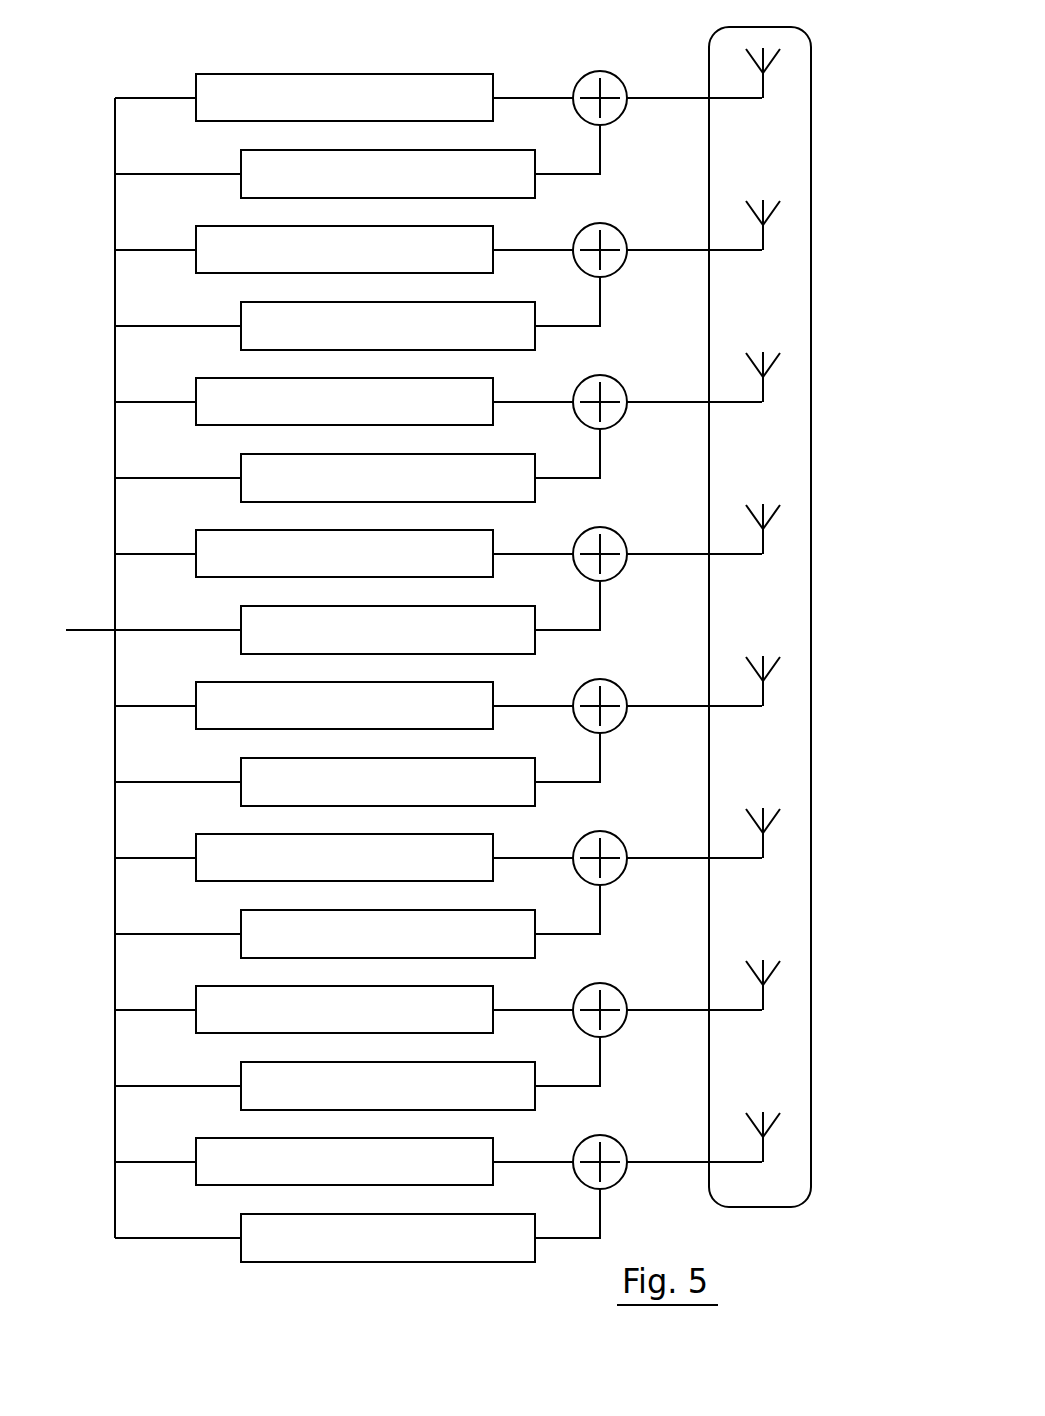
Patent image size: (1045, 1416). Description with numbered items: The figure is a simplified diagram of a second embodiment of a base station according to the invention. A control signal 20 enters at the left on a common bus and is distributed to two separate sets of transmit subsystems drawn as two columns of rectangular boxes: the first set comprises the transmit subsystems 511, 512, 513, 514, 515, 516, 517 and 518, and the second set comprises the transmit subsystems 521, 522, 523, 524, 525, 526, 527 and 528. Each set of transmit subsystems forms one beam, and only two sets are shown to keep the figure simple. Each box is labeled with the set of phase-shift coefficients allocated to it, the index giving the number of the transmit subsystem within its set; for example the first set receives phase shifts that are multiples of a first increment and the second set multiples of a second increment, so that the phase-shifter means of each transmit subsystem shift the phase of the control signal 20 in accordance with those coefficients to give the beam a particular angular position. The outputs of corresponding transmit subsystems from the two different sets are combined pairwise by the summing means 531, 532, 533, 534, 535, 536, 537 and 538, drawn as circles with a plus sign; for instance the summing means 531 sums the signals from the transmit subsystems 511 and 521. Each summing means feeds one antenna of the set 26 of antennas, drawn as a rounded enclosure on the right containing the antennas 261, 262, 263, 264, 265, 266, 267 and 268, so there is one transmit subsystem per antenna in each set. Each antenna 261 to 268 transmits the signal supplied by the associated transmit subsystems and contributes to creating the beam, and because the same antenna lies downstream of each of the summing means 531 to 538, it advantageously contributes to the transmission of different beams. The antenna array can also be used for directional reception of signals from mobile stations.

The control signal 20 is at (83, 626).
The set of antennas 26 is at (812, 67).
The transmit subsystem 511 is at (458, 100).
The transmit subsystem 512 is at (458, 252).
The transmit subsystem 513 is at (458, 404).
The transmit subsystem 514 is at (458, 556).
The transmit subsystem 515 is at (458, 708).
The transmit subsystem 516 is at (458, 860).
The transmit subsystem 517 is at (458, 1012).
The transmit subsystem 518 is at (458, 1164).
The transmit subsystem 521 is at (262, 165).
The transmit subsystem 522 is at (262, 317).
The transmit subsystem 523 is at (262, 469).
The transmit subsystem 524 is at (262, 621).
The transmit subsystem 525 is at (262, 773).
The transmit subsystem 526 is at (262, 925).
The transmit subsystem 527 is at (262, 1077).
The transmit subsystem 528 is at (262, 1229).
The summing means 531 is at (605, 72).
The summing means 532 is at (605, 224).
The summing means 533 is at (605, 376).
The summing means 534 is at (605, 528).
The summing means 535 is at (605, 680).
The summing means 536 is at (605, 832).
The summing means 537 is at (605, 984).
The summing means 538 is at (605, 1136).
The antenna 261 is at (755, 80).
The antenna 262 is at (755, 232).
The antenna 263 is at (755, 384).
The antenna 264 is at (755, 536).
The antenna 265 is at (755, 688).
The antenna 266 is at (755, 840).
The antenna 267 is at (755, 992).
The antenna 268 is at (755, 1144).